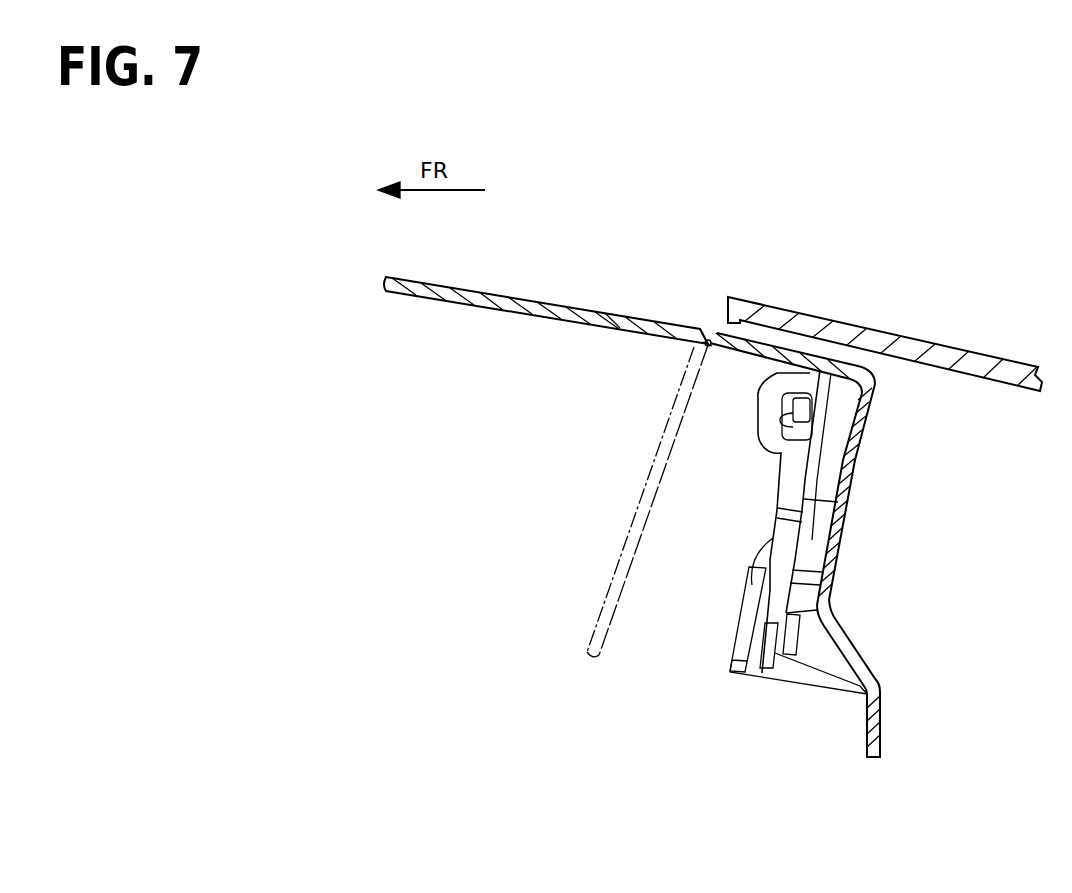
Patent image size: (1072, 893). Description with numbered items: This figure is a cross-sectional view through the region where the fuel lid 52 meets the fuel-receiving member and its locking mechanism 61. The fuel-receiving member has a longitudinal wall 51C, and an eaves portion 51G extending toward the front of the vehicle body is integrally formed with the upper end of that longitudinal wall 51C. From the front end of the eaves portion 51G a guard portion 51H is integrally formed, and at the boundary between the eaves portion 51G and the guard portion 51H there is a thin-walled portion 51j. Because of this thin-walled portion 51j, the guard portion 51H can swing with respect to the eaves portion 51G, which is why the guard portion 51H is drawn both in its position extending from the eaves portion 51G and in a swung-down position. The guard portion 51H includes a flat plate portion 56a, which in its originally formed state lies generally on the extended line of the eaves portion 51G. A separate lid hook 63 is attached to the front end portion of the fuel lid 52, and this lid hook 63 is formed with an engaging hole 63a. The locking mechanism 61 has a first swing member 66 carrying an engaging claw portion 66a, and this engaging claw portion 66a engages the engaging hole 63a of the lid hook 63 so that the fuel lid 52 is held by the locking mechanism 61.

The guard portion 51H is at (535, 301).
The flat plate portion 56a is at (612, 314).
The thin-walled portion 51j is at (708, 340).
The eaves portion 51G is at (777, 360).
The longitudinal wall 51C is at (853, 365).
The fuel lid 52 is at (957, 352).
The engaging claw portion 66a is at (803, 421).
The first swing member 66 is at (796, 478).
The locking mechanism 61 is at (807, 539).
The lid hook 63 is at (762, 432).
The engaging hole 63a is at (782, 452).